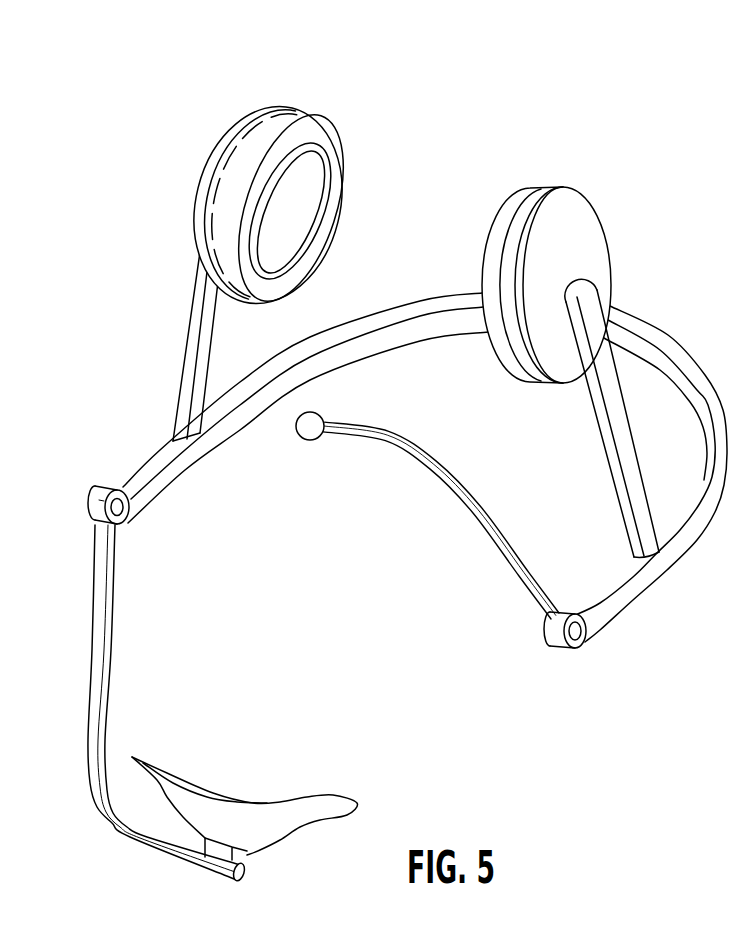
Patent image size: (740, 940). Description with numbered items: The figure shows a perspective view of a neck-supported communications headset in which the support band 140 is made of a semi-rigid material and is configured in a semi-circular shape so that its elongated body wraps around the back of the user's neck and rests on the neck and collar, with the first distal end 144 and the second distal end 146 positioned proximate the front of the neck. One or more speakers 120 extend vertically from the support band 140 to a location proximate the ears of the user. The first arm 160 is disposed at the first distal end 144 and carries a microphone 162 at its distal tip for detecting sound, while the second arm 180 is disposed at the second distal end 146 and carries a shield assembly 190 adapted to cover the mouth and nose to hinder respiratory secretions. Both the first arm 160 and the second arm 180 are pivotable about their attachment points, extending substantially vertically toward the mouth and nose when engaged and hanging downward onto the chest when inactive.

The speaker 120 is at (314, 119).
The support band 140 is at (668, 333).
The first distal end 144 is at (622, 610).
The second distal end 146 is at (142, 467).
The first arm 160 is at (497, 531).
The microphone 162 is at (310, 440).
The second arm 180 is at (100, 812).
The shield assembly 190 is at (272, 830).